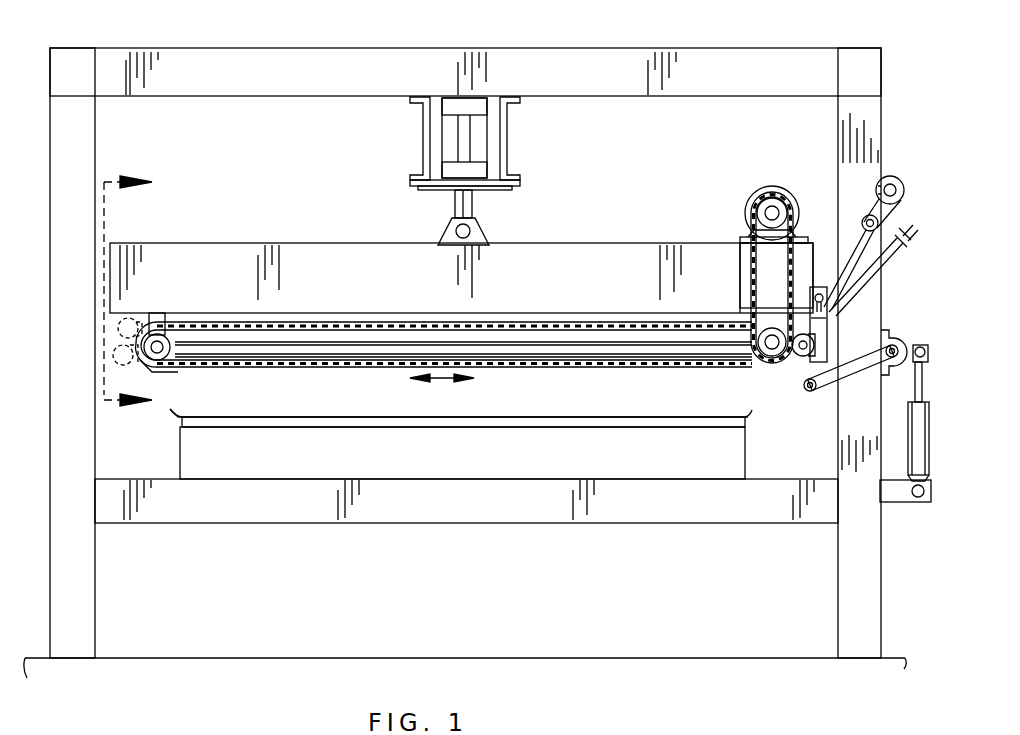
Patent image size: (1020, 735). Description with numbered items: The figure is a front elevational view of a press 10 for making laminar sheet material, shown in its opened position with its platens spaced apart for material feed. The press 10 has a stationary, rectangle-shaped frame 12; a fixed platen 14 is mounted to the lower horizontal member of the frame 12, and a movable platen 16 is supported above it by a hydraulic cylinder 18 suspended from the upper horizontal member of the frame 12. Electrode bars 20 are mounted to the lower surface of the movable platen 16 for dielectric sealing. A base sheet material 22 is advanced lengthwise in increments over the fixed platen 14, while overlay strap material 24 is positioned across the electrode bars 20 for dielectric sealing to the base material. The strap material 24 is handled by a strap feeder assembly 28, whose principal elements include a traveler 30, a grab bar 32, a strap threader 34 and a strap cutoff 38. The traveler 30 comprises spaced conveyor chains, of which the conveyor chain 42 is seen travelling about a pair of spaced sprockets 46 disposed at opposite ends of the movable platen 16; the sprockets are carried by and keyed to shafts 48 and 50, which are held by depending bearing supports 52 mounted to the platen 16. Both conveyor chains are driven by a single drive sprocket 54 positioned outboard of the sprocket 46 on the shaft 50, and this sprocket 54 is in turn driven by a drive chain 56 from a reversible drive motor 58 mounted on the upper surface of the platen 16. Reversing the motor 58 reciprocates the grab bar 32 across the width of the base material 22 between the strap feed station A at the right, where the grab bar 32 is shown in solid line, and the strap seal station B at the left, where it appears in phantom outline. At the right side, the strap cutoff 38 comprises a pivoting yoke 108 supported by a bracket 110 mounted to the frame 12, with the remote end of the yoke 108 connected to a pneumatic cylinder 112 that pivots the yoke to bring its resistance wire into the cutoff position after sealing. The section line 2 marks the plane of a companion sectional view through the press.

The press 10 is at (503, 44).
The frame 12 is at (317, 58).
The fixed platen 14 is at (192, 452).
The movable platen 16 is at (250, 252).
The hydraulic cylinder 18 is at (475, 143).
The electrode bars 20 is at (283, 352).
The base sheet material 22 is at (282, 425).
The overlay strap material 24 is at (237, 412).
The strap feeder assembly 28 is at (862, 296).
The traveler 30 is at (620, 367).
The grab bar 32 is at (801, 357).
The strap threader 34 is at (858, 205).
The strap cutoff 38 is at (864, 376).
The conveyor chain 42 is at (362, 323).
The sprockets 46 is at (171, 357).
The shaft 48 is at (161, 343).
The shaft 50 is at (770, 336).
The bearing supports 52 is at (152, 320).
The drive sprocket 54 is at (768, 352).
The drive chain 56 is at (753, 256).
The drive motor 58 is at (760, 194).
The pivoting yoke 108 is at (848, 368).
The bracket 110 is at (888, 345).
The pneumatic cylinder 112 is at (916, 438).
The section line 2- 2 is at (128, 291).
The strap feed station A is at (795, 378).
The strap seal station B is at (128, 370).